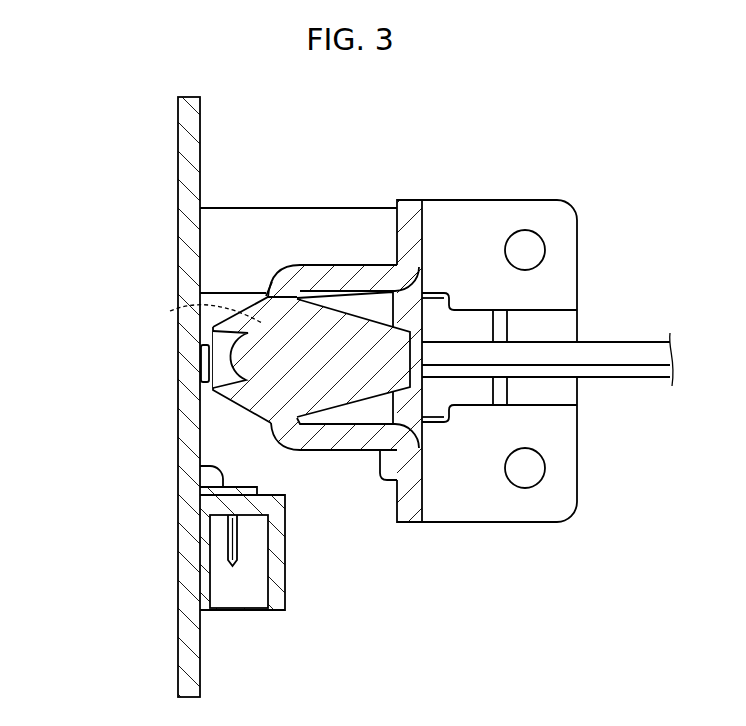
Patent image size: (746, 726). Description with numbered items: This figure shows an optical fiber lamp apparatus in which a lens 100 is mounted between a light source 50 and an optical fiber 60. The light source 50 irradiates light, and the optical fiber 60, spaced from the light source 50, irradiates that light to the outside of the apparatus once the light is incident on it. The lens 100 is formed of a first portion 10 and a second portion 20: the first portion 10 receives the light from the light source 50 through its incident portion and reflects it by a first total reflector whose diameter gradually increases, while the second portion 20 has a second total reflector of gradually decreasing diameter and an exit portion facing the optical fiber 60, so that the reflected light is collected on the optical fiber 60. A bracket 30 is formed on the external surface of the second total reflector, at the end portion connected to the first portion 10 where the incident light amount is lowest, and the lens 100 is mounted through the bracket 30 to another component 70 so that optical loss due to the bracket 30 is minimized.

The first portion 10 is at (170, 311).
The second portion 20 is at (387, 368).
The bracket 30 is at (352, 278).
The light source 50 is at (200, 386).
The optical fiber 60 is at (625, 347).
The another component 70 is at (494, 215).
The lens 100 is at (266, 282).